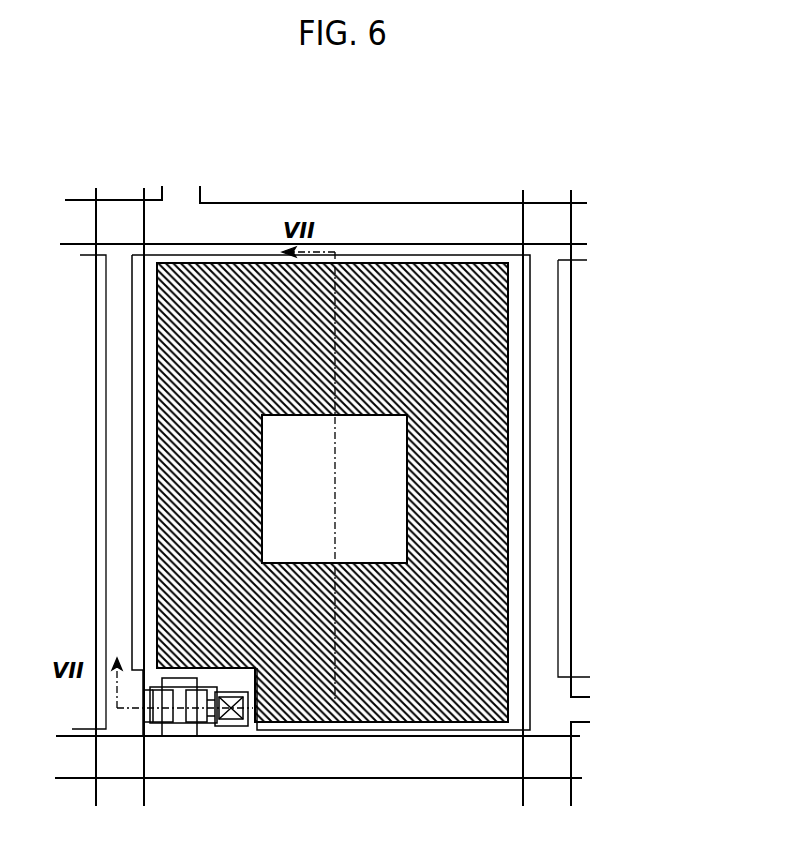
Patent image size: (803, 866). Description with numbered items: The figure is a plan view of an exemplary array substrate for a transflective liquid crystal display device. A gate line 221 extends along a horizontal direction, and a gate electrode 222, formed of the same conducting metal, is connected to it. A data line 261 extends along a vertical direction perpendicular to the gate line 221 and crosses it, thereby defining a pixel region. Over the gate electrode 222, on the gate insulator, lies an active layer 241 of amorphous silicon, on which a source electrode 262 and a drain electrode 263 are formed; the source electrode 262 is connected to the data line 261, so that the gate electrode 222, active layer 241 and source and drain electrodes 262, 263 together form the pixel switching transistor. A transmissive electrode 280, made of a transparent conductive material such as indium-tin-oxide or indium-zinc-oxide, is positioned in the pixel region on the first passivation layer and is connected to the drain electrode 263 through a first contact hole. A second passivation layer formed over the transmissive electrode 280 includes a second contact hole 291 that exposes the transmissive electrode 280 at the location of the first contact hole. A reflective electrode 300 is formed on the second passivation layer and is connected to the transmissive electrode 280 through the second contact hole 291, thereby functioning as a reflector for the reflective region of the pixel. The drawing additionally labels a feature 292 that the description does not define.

The gate line 221 is at (421, 201).
The gate electrode 222 is at (180, 678).
The active layer 241 is at (188, 738).
The data line 261 is at (95, 386).
The source electrode 262 is at (168, 740).
The drain electrode 263 is at (200, 740).
The transmissive electrode 280 is at (508, 582).
The second contact hole 291 is at (235, 727).
The opening 292 is at (393, 528).
The reflective electrode 300 is at (533, 323).